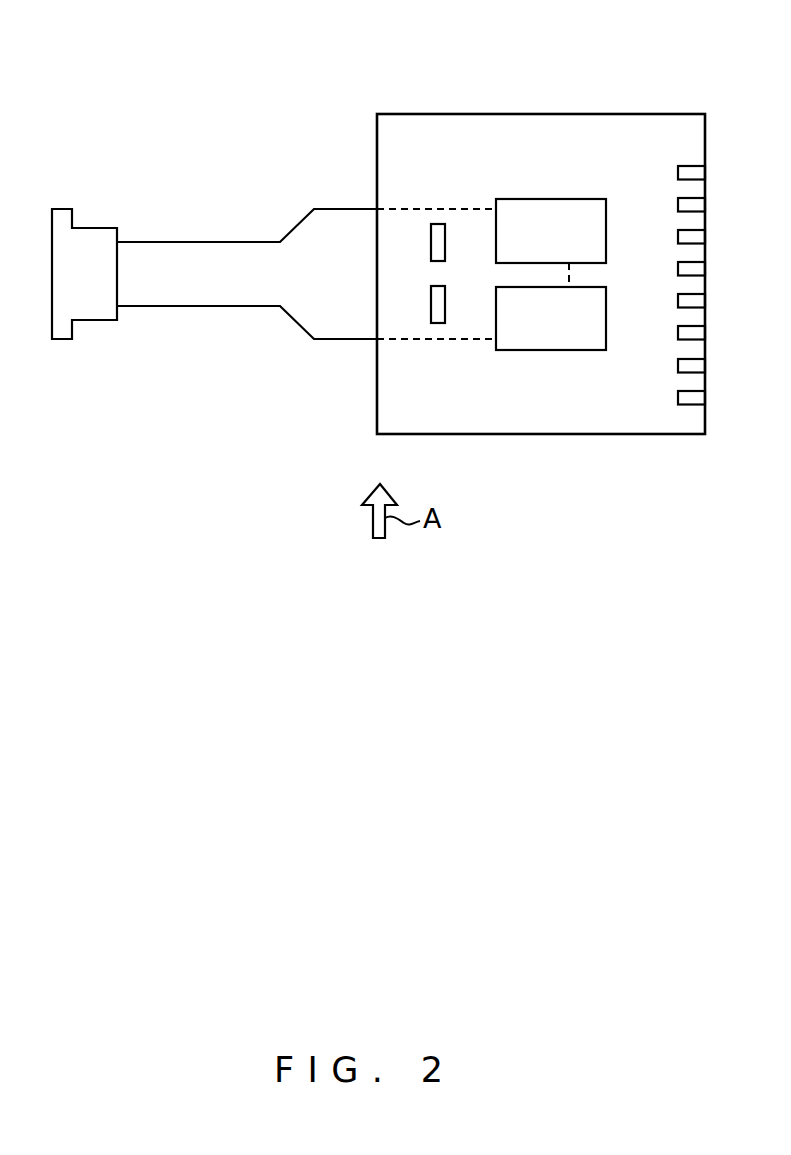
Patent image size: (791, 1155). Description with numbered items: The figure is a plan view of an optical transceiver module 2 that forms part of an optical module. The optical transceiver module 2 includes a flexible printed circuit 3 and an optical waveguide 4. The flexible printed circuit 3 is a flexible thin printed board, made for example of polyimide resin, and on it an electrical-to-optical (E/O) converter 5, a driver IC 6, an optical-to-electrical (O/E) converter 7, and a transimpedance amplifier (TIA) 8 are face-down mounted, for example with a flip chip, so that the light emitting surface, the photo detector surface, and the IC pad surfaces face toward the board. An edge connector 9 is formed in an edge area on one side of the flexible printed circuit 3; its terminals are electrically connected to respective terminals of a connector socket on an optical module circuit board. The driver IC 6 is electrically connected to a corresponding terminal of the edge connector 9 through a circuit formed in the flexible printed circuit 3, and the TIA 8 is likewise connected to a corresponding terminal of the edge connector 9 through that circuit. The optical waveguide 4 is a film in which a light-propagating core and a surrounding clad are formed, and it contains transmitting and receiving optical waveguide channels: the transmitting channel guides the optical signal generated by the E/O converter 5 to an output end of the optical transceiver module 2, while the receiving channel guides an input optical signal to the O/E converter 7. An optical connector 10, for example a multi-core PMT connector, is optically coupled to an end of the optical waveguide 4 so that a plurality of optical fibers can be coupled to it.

The optical transceiver module 2 is at (378, 277).
The flexible printed circuit 3 is at (613, 113).
The optical waveguide 4 is at (210, 241).
The electrical-to-optical (E/O) converter 5 is at (437, 224).
The driver IC 6 is at (545, 199).
The optical-to-electrical (O/E) converter 7 is at (437, 323).
The transimpedance amplifier (TIA) 8 is at (535, 350).
The edge connector 9 is at (678, 170).
The optical connector 10 is at (90, 227).